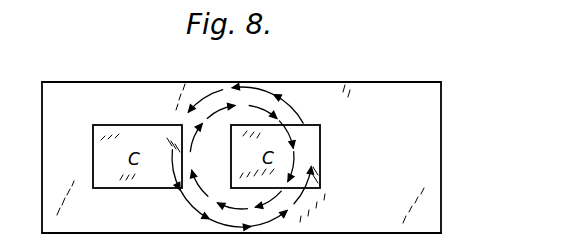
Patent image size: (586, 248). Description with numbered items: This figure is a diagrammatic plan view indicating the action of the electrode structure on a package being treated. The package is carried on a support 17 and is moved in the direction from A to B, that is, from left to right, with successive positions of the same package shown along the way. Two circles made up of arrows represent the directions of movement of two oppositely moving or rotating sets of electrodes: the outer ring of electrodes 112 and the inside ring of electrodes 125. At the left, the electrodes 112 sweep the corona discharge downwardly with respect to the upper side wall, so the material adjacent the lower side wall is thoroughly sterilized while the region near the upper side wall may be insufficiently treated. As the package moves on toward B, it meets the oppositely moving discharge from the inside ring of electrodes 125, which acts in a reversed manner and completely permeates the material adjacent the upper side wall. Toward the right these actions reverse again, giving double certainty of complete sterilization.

The plate 17 is at (52, 183).
The electrodes 112 is at (290, 103).
The inside ring of electrodes 125 is at (292, 137).
The starting position A is at (46, 153).
The end position B is at (437, 153).